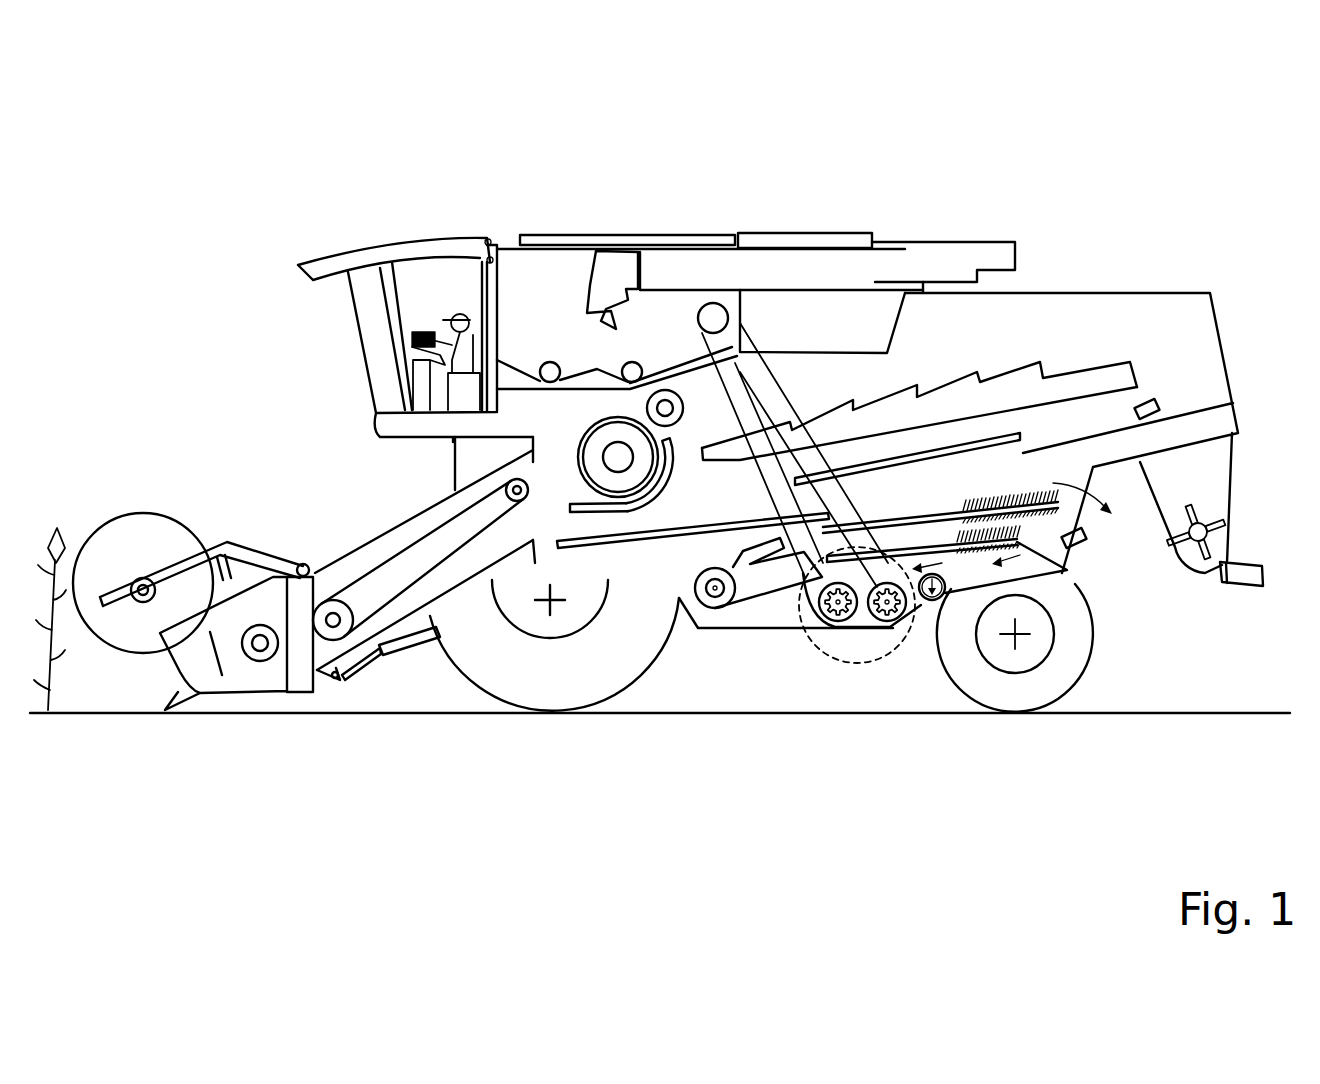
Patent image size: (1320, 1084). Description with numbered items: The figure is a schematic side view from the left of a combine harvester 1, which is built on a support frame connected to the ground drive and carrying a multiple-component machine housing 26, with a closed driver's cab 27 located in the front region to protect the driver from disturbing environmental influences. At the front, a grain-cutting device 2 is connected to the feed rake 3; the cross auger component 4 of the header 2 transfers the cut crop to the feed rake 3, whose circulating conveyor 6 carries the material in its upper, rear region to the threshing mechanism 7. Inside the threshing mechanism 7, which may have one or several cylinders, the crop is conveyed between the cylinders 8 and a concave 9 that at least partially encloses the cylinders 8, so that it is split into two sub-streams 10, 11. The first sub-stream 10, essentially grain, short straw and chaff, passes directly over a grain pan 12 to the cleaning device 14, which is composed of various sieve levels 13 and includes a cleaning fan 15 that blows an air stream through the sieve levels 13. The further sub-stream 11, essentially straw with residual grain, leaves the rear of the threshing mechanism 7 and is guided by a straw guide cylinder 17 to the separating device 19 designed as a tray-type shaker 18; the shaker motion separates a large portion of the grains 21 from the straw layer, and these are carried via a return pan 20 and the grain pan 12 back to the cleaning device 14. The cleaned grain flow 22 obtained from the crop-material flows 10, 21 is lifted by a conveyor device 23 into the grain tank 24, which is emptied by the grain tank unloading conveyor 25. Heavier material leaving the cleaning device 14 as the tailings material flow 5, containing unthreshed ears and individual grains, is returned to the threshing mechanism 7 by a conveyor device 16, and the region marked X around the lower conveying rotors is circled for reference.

The combine harvester 1 is at (230, 248).
The grain-cutting device 2 is at (233, 688).
The feed rake 3 is at (386, 652).
The cross auger component 4 is at (261, 655).
The tailings material flow 5 is at (1018, 545).
The circulating conveyor 6 is at (380, 563).
The threshing mechanism 7 is at (582, 456).
The cylinders 8 is at (590, 481).
The concave 9 is at (648, 512).
The first sub-stream 10 is at (652, 492).
The further sub-stream 11 is at (660, 442).
The grain pan 12 is at (620, 548).
The sieve levels 13 is at (1060, 528).
The cleaning device 14 is at (875, 523).
The cleaning fan 15 is at (722, 613).
The conveyor device 16 is at (937, 608).
The straw guide cylinder 17 is at (663, 392).
The tray-type shaker 18 is at (1088, 383).
The separating device 19 is at (883, 405).
The return pan 20 is at (963, 455).
The grains 21 is at (895, 446).
The cleaned grain flow 22 is at (945, 602).
The conveyor device 23 is at (722, 317).
The grain tank 24 is at (533, 287).
The grain tank unloading conveyor 25 is at (952, 263).
The machine housing 26 is at (1163, 313).
The driver's cab 27 is at (418, 278).
The detail region X is at (844, 658).